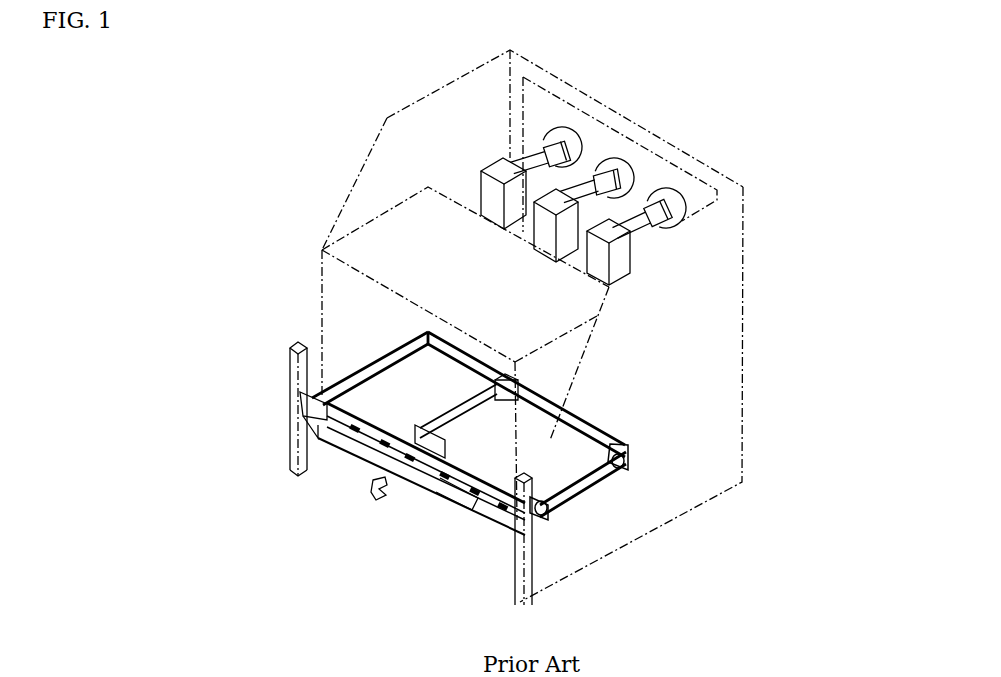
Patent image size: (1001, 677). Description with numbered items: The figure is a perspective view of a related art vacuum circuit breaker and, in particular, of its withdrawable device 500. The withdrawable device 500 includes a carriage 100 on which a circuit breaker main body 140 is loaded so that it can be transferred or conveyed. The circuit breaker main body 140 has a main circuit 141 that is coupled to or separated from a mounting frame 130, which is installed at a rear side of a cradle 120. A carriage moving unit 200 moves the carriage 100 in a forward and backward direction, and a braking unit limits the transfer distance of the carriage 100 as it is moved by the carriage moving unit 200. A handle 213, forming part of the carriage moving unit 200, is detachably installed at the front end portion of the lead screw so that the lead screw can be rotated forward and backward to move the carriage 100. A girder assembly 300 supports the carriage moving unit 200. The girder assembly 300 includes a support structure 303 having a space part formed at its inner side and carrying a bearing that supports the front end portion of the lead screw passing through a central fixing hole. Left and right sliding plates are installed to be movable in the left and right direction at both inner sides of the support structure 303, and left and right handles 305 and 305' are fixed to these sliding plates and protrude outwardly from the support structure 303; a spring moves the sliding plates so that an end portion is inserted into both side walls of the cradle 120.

The carriage 100 is at (356, 357).
The cradle 120 is at (727, 393).
The mounting frame 130 is at (615, 140).
The circuit breaker main body 140 is at (413, 237).
The main circuit 141 is at (530, 162).
The carriage moving unit 200 is at (364, 489).
The handle 213 is at (383, 498).
The girder assembly 300 is at (511, 543).
The support structure 303 is at (434, 490).
The left handle 305 is at (309, 423).
The right handle 305' is at (461, 521).
The withdrawable device 500 is at (411, 497).